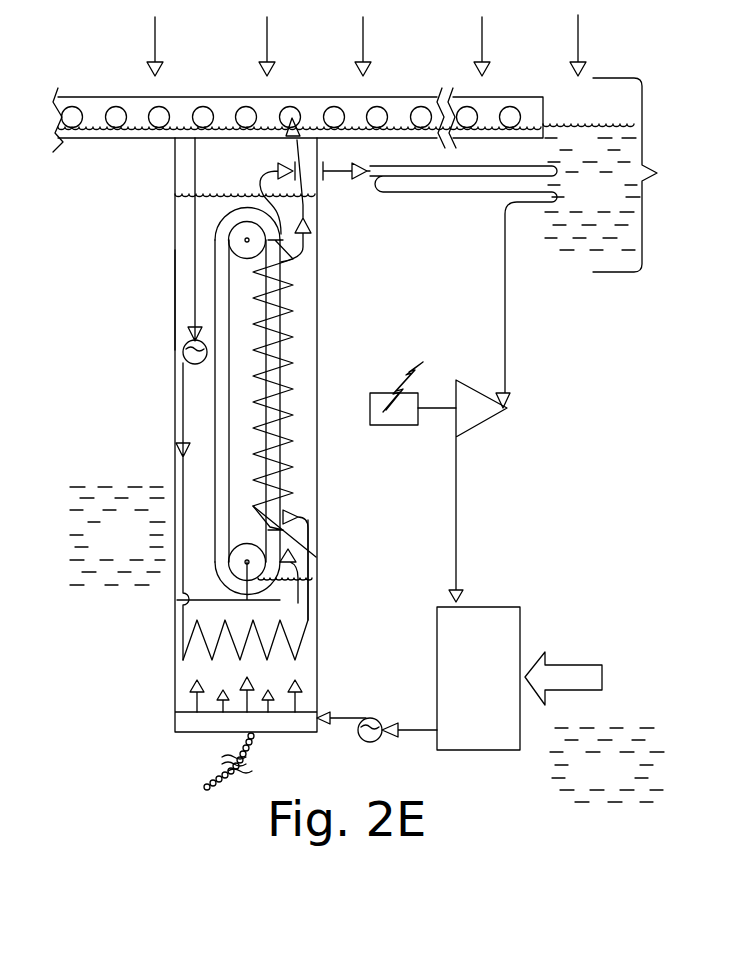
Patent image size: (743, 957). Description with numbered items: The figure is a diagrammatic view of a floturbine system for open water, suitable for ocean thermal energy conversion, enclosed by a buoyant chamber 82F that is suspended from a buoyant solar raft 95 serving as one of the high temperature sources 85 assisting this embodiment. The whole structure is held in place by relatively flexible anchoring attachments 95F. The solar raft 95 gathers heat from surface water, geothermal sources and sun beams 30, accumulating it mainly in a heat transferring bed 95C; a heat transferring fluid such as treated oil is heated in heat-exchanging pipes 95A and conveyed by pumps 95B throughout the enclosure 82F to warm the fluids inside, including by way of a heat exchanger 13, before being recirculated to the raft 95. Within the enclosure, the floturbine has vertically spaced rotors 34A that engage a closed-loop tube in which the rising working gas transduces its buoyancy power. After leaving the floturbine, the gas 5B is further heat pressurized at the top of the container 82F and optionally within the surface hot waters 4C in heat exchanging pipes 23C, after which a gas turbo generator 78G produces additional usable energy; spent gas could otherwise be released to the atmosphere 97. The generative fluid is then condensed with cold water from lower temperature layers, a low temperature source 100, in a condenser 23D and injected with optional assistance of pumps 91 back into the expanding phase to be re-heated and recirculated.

The solar raft 95 is at (103, 140).
The heat-exchanging pipes 95A is at (117, 117).
The heat transferring bed 95C is at (225, 110).
The atmosphere 97 is at (438, 58).
The sun beams 30 is at (578, 42).
The high temperature source (HTS) 85 is at (717, 192).
The surface hot waters 4C is at (367, 470).
The gas 5B is at (245, 182).
The buoyant chamber 82F is at (175, 297).
The pumps 95B is at (185, 353).
The heat exchanger 13 is at (293, 388).
The rotors or sprocket-wheels 34A is at (236, 562).
The attachments 95F is at (212, 773).
The heat exchanging pipes 23C is at (418, 194).
The gas turbo generator 78G is at (478, 417).
The condenser 23D is at (500, 607).
The pumps 91 is at (380, 722).
The low temperature source (LTS) 100 is at (692, 695).